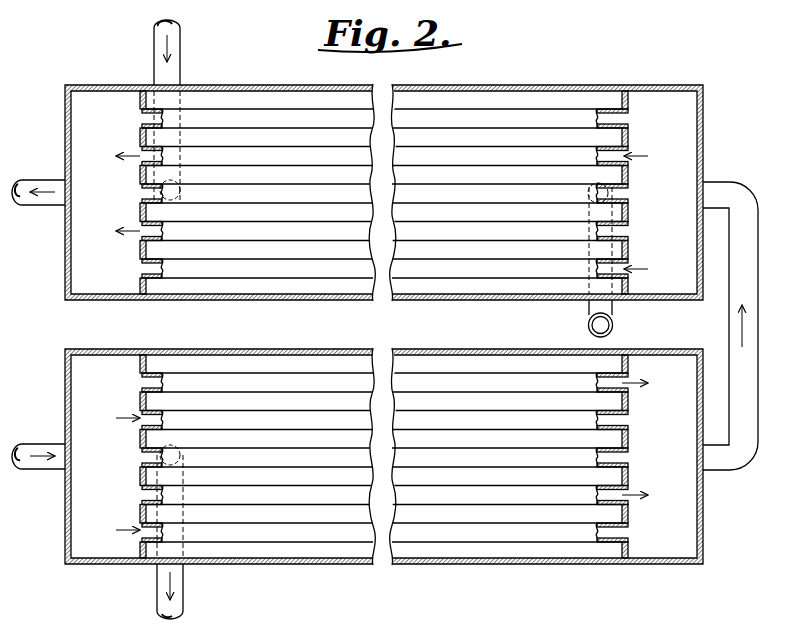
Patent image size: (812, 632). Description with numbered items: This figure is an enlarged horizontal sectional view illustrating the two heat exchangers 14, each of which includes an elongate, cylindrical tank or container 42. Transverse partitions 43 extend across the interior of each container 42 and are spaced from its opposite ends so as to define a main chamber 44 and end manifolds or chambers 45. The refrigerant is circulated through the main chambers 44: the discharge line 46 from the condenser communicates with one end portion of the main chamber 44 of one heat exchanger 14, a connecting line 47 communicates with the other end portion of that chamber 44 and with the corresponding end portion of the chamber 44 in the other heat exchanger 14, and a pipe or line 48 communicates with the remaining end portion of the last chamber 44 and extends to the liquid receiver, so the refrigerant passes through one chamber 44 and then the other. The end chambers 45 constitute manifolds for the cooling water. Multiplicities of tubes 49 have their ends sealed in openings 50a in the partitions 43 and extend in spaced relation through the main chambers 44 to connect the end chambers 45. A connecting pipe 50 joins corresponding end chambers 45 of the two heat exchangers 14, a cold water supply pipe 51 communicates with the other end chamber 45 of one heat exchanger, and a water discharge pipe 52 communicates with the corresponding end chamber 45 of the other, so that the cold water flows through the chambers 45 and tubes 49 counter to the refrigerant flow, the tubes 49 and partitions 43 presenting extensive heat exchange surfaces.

The heat exchanger 14 is at (384, 331).
The tank or container 42 is at (477, 85).
The transverse partition 43 is at (143, 95).
The main chamber 44 is at (503, 97).
The end manifold or chamber 45 is at (389, 343).
The discharge line 46 is at (181, 60).
The connecting line 47 is at (588, 325).
The pipe or line 48 is at (184, 600).
The tubes 49 is at (297, 230).
The connecting pipe 50 is at (735, 458).
The openings 50a is at (630, 116).
The cold water supply pipe 51 is at (40, 470).
The water discharge pipe 52 is at (43, 206).